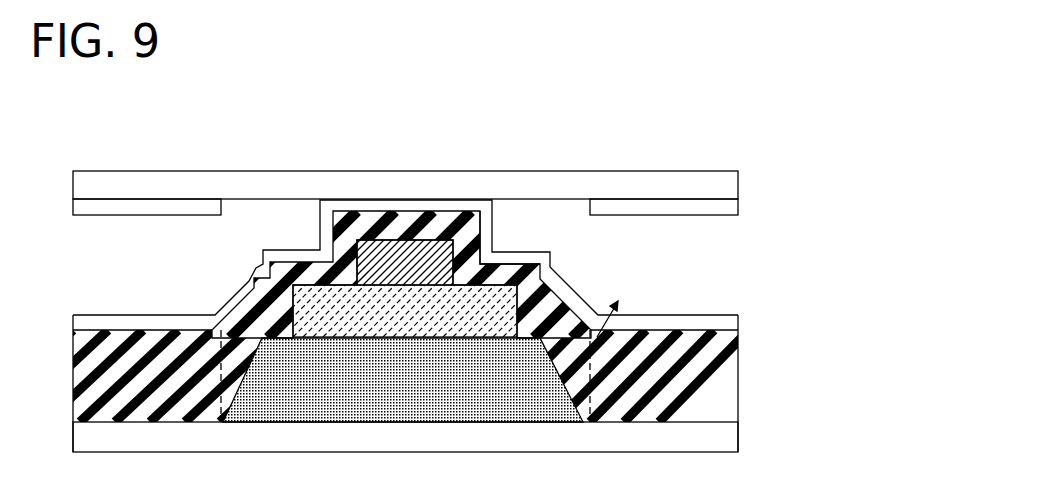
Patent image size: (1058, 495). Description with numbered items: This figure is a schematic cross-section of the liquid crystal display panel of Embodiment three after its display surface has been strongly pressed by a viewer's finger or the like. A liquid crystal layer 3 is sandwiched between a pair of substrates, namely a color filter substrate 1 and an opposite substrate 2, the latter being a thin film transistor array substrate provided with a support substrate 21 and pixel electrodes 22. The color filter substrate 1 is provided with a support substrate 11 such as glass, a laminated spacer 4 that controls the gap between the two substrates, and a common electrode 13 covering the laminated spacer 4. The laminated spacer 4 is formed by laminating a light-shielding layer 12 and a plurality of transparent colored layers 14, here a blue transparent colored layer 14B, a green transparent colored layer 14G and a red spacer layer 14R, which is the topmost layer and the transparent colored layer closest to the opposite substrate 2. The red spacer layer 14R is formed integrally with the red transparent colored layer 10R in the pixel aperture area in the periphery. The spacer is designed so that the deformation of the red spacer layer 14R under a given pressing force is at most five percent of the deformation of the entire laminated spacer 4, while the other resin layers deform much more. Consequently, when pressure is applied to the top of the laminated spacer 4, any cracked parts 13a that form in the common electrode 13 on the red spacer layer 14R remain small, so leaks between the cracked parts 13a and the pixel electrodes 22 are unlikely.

The color filter substrate 1 is at (62, 317).
The opposite substrate 2 is at (62, 172).
The liquid crystal layer 3 is at (62, 220).
The laminated spacer 4 is at (886, 230).
The red transparent colored layer 10R is at (703, 391).
The support substrate 11 is at (727, 428).
The light-shielding layer 12 is at (560, 407).
The common electrode 13 is at (297, 257).
The cracked parts 13a is at (513, 236).
The transparent colored layers 14 is at (836, 232).
The blue transparent colored layer 14B is at (453, 268).
The green transparent colored layer 14G is at (488, 326).
The red spacer layer 14R is at (557, 317).
The support substrate 21 is at (723, 186).
The pixel electrodes 22 is at (725, 208).